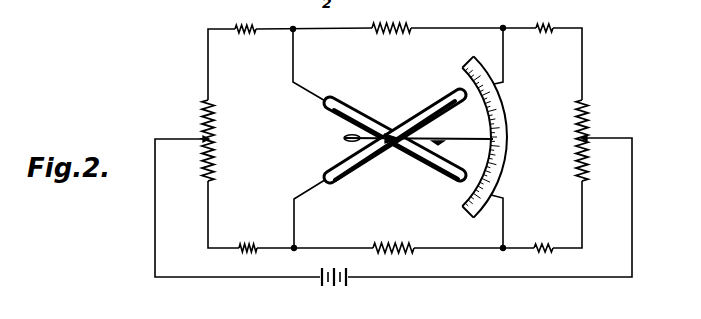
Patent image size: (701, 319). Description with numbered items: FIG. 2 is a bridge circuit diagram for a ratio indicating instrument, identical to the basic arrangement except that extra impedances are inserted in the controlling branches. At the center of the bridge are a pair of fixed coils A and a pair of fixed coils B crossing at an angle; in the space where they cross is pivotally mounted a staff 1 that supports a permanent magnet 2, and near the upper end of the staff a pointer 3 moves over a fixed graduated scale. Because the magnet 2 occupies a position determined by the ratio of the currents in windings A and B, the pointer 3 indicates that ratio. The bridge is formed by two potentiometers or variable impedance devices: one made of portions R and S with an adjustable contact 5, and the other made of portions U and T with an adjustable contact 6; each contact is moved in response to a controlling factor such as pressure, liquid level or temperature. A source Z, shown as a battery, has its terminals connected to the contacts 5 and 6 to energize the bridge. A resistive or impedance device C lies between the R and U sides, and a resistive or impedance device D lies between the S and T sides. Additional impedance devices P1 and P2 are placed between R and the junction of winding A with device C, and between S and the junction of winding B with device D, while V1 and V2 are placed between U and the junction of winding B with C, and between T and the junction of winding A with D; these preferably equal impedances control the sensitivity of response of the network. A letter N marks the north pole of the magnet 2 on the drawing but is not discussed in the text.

The staff 1 is at (395, 138).
The permanent magnet 2 is at (395, 140).
The pointer 3 is at (412, 150).
The adjustable contact 5 is at (200, 140).
The adjustable contact 6 is at (592, 138).
The fixed coils A is at (385, 163).
The fixed coils B is at (418, 167).
The resistive or impedance device C is at (391, 18).
The resistive or impedance device D is at (393, 237).
The additional impedance device P1 is at (245, 43).
The additional impedance device P2 is at (246, 237).
The additional impedance device V1 is at (545, 40).
The additional impedance device V2 is at (543, 238).
The portion of variable impedance device RS R is at (193, 146).
The portion of variable impedance device RS S is at (193, 146).
The portion of variable impedance device TU U is at (591, 138).
The portion of variable impedance device TU T is at (591, 138).
The north pole of needle N is at (487, 139).
The source Z is at (393, 220).